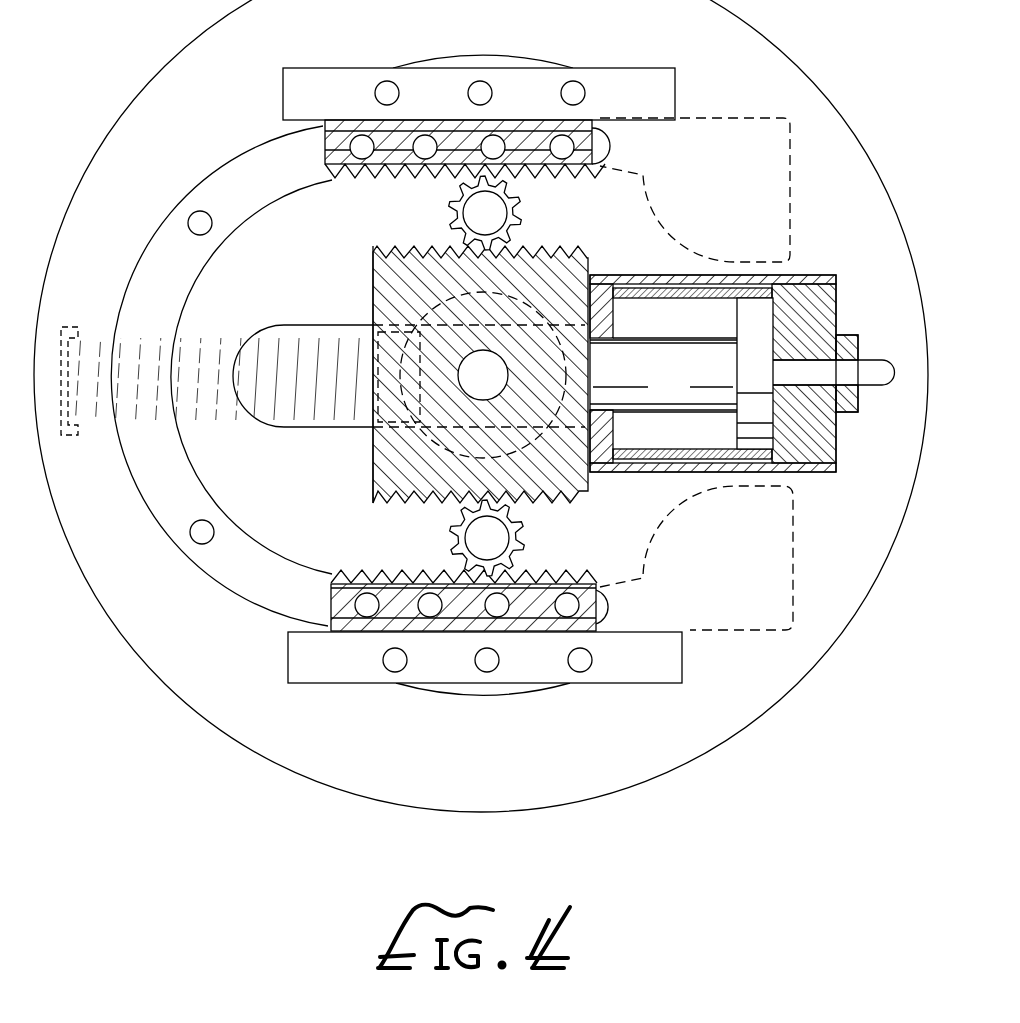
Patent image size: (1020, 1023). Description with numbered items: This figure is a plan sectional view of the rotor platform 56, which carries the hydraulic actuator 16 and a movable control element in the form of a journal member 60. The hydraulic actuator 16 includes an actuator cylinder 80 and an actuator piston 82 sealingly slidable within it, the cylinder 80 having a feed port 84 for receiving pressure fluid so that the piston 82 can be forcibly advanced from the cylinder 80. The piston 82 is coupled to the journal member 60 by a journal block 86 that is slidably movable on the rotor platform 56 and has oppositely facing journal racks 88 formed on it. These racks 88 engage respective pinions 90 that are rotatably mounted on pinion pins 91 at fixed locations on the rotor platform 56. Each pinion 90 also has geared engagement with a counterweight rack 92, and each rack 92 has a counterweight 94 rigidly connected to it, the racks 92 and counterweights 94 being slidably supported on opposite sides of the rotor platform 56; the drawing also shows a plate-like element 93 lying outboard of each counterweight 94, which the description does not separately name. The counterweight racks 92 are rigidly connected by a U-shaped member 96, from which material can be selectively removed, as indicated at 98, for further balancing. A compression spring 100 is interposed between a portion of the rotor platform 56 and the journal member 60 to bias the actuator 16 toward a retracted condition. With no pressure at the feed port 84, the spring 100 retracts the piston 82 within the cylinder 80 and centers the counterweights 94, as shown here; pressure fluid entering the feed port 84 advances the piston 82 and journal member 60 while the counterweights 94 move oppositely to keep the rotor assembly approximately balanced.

The hydraulic actuator 16 is at (812, 262).
The rotor platform 56 is at (321, 309).
The journal member 60 is at (469, 389).
The actuator cylinder 80 is at (698, 293).
The actuator piston 82 is at (681, 373).
The feed port 84 is at (892, 390).
The journal block 86 is at (375, 448).
The journal racks 88 is at (582, 252).
The pinions 90 is at (527, 218).
The pinion pins 91 is at (472, 227).
The counterweight rack 92 is at (598, 175).
The guide plate 93 is at (650, 67).
The counterweight 94 is at (323, 143).
The U-shaped member 96 is at (187, 420).
The removed material locations 98 is at (195, 212).
The compression spring 100 is at (268, 408).